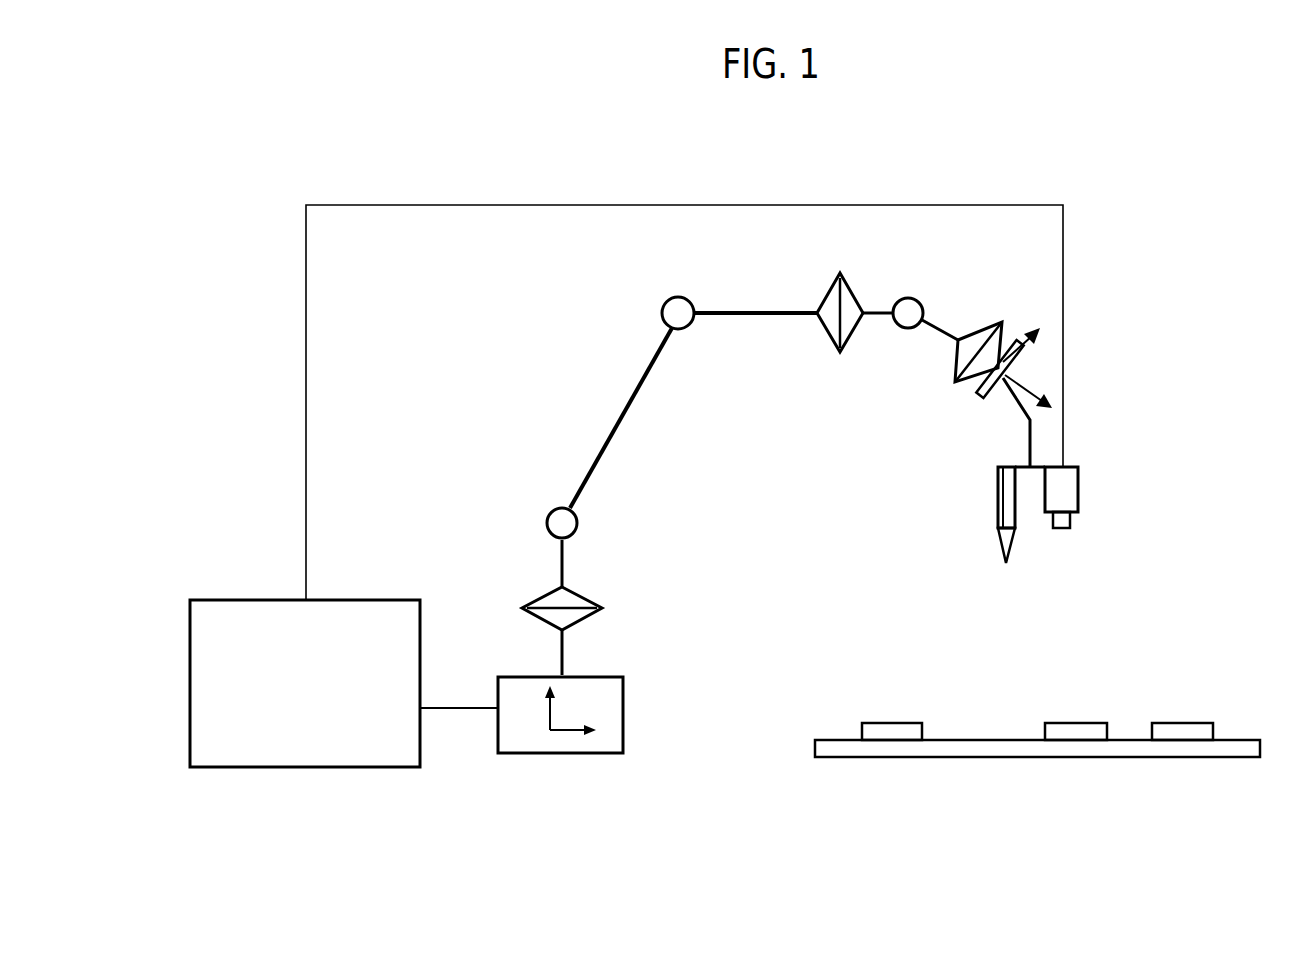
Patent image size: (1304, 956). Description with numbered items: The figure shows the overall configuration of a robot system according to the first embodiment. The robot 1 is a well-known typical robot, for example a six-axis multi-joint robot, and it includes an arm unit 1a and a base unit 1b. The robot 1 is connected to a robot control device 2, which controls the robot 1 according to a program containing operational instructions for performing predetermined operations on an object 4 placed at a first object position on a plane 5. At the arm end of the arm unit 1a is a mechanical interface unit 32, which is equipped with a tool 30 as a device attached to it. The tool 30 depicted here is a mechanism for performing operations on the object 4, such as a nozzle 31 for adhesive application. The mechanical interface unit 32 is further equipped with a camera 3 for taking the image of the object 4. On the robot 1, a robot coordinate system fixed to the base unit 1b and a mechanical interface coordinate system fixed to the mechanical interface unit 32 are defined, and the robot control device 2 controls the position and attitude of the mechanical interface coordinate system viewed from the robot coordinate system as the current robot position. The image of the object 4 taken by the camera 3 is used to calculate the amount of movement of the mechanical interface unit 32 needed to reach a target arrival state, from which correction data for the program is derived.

The robot 1 is at (640, 385).
The arm unit 1a is at (723, 311).
The base unit 1b is at (623, 737).
The robot control device 2 is at (420, 750).
The camera 3 is at (1078, 488).
The tool 30 is at (1028, 445).
The nozzle 31 is at (1013, 540).
The mechanical interface unit 32 is at (978, 393).
The object 4 is at (1200, 723).
The plane 5 is at (1240, 757).